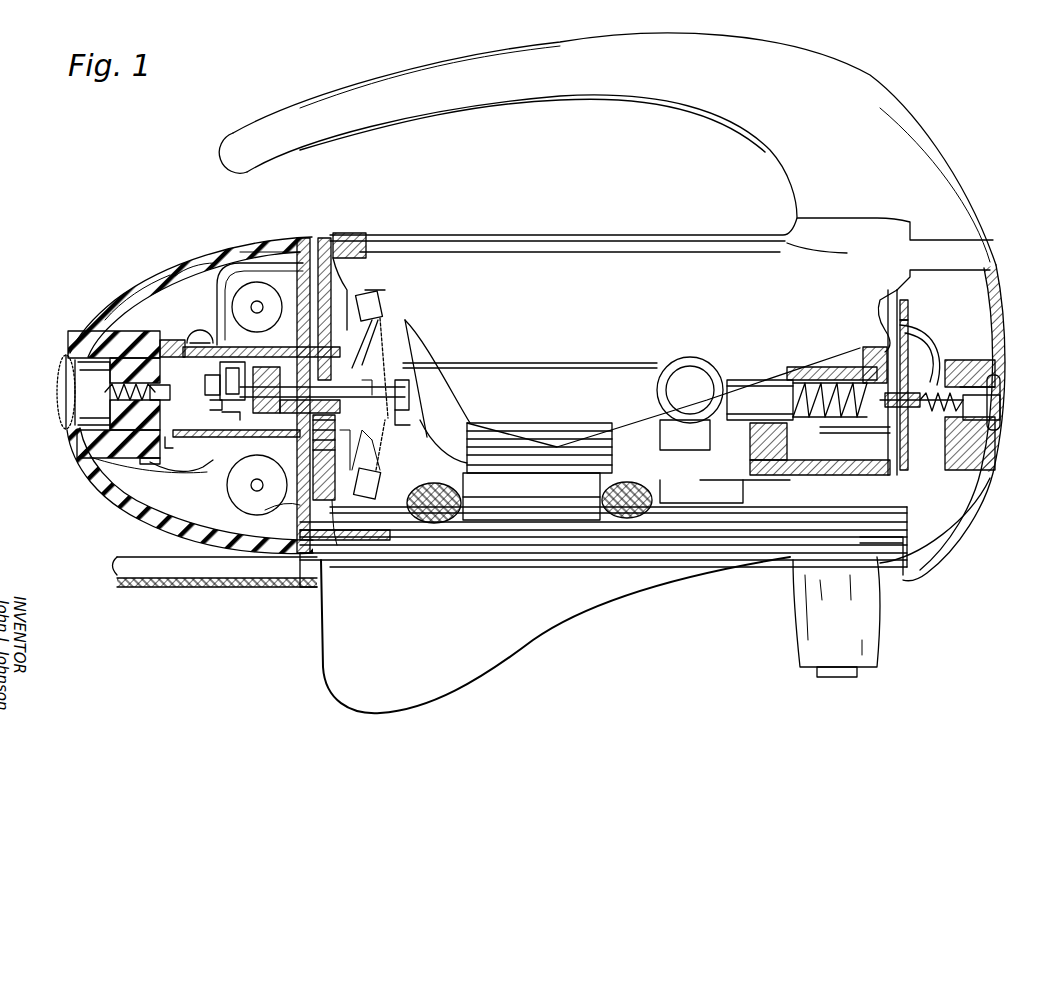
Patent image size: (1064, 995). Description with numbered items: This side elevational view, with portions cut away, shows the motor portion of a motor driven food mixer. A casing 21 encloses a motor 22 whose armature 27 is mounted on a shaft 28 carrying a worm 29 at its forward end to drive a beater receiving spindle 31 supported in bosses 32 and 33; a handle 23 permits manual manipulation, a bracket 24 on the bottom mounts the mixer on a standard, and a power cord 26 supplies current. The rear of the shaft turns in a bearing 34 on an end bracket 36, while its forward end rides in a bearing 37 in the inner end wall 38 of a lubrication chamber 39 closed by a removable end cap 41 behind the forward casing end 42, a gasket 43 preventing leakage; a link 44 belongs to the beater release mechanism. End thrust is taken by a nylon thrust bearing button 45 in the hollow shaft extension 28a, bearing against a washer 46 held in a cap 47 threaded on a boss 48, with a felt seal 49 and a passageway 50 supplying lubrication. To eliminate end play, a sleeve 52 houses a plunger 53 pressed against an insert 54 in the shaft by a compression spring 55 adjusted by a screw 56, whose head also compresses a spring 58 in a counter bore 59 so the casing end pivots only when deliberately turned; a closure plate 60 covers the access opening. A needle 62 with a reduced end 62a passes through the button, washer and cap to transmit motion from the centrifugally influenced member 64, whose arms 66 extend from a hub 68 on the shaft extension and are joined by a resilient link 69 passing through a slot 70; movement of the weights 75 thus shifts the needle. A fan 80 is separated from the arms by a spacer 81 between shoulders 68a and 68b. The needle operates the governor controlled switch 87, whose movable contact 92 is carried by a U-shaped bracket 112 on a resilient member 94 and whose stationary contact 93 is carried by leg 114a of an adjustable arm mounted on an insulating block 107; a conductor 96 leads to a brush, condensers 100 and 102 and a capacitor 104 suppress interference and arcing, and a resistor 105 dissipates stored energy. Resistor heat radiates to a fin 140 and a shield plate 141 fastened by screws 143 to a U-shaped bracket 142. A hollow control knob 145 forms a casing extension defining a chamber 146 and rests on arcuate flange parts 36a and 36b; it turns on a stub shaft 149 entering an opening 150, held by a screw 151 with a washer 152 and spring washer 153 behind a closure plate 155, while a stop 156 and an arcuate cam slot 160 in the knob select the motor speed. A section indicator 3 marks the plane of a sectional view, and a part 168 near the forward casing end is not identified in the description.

The section line 3- 3 is at (48, 391).
The casing 21 is at (626, 240).
The motor 22 is at (566, 524).
The handle 23 is at (532, 102).
The bracket 24 is at (549, 636).
The power attachment cord 26 is at (232, 588).
The armature 27 is at (637, 450).
The shaft 28 is at (413, 413).
The hollow extension 28a is at (336, 520).
The worm 29 is at (833, 383).
The beater receiving spindle 31 is at (863, 672).
The boss 32 is at (847, 378).
The boss 33 is at (793, 592).
The bearing 34 is at (275, 360).
The end bracket 36 is at (336, 240).
The arcuate projecting flange part 36a is at (292, 250).
The arcuate projecting flange part 36b is at (273, 560).
The bearing 37 is at (748, 428).
The inner end wall 38 is at (797, 352).
The lubrication chamber 39 is at (808, 478).
The removable end cap 41 is at (912, 370).
The forward end 42 is at (1005, 318).
The gasket 43 is at (887, 325).
The link 44 is at (930, 338).
The end thrust bearing button 45 is at (243, 508).
The bearing washer 46 is at (262, 432).
The cap 47 is at (244, 347).
The boss 48 is at (333, 440).
The felt lubricating seal 49 is at (277, 340).
The lubricating passageway 50 is at (328, 275).
The sleeve 52 is at (905, 405).
The plunger 53 is at (897, 450).
The insert 54 is at (882, 420).
The compression spring 55 is at (983, 426).
The screw 56 is at (993, 405).
The compression spring 58 is at (993, 447).
The counter bore 59 is at (982, 372).
The closure plate 60 is at (1005, 388).
The needle 62 is at (405, 388).
The reduced cross section end 62a is at (413, 426).
The centrifugally influenced member 64 is at (390, 343).
The arms 66 is at (366, 450).
The hub 68 is at (377, 358).
The shoulder 68a is at (362, 340).
The shoulder 68b is at (395, 330).
The resilient connecting link 69 is at (375, 467).
The slot 70 is at (374, 377).
The weights 75 is at (340, 345).
The fan 80 is at (370, 295).
The spacer 81 is at (352, 443).
The governor controlled switch 87 is at (216, 382).
The movable contact 92 is at (212, 407).
The stationary contact 93 is at (222, 425).
The resilient member 94 is at (240, 350).
The conductor 96 is at (390, 535).
The condenser 100 is at (768, 486).
The condenser 102 is at (304, 240).
The capacitor 104 is at (240, 500).
The resistor 105 is at (250, 293).
The insulating block 107 is at (272, 508).
The U-shaped bracket 112 is at (232, 387).
The leg 114a is at (236, 433).
The heat dissipator 140 is at (261, 258).
The shield plate 141 is at (222, 272).
The bracket 142 is at (203, 468).
The screws 143 is at (197, 330).
The control knob 145 is at (157, 267).
The chamber 146 is at (122, 310).
The stub shaft 149 is at (148, 468).
The opening 150 is at (148, 344).
The screw 151 is at (126, 400).
The washer 152 is at (392, 368).
The spring washer 153 is at (116, 396).
The closure plate 155 is at (58, 375).
The insulating strip 156 is at (165, 448).
The arcuate cam slot 160 is at (197, 340).
The housing 168 is at (947, 362).